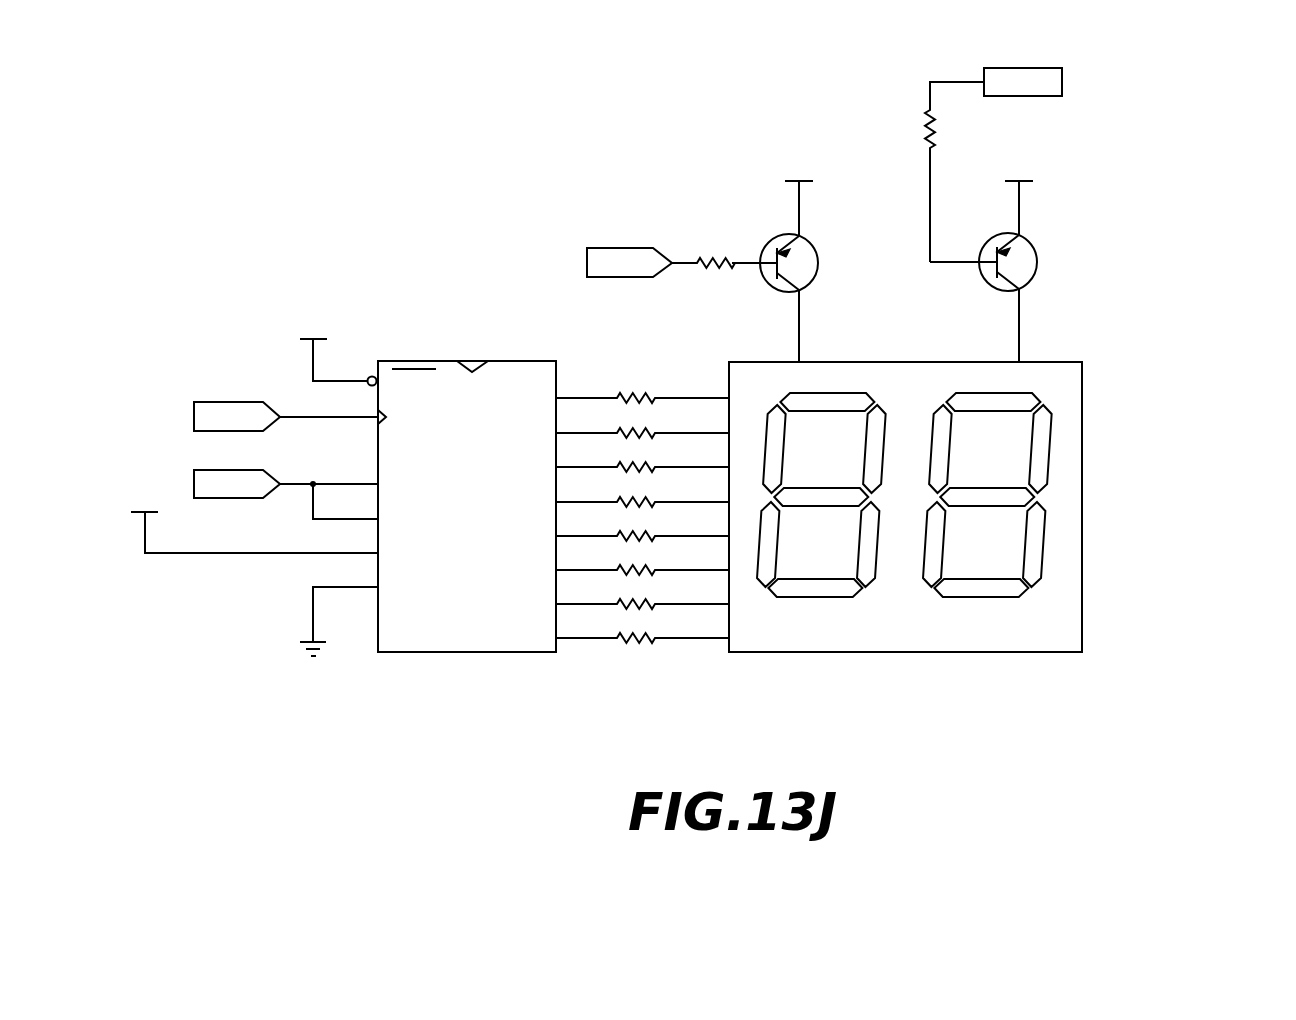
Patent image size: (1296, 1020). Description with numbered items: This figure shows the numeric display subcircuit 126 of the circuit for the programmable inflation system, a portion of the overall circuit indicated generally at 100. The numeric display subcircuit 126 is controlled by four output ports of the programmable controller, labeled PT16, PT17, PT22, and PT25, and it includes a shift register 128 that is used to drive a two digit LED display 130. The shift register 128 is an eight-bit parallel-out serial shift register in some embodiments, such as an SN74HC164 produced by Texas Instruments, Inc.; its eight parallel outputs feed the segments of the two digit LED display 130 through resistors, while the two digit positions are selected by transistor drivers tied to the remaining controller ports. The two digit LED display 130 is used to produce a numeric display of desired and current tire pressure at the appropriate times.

The display circuit 100 is at (287, 153).
The numeric display subcircuit 126 is at (1188, 46).
The shift register 128 is at (466, 652).
The two digit LED display 130 is at (1082, 512).